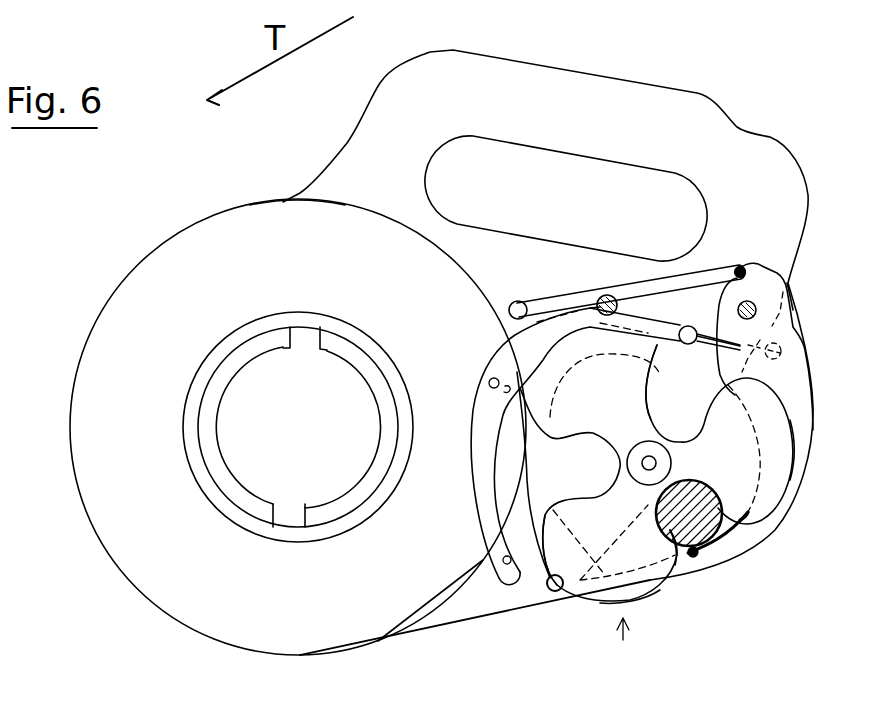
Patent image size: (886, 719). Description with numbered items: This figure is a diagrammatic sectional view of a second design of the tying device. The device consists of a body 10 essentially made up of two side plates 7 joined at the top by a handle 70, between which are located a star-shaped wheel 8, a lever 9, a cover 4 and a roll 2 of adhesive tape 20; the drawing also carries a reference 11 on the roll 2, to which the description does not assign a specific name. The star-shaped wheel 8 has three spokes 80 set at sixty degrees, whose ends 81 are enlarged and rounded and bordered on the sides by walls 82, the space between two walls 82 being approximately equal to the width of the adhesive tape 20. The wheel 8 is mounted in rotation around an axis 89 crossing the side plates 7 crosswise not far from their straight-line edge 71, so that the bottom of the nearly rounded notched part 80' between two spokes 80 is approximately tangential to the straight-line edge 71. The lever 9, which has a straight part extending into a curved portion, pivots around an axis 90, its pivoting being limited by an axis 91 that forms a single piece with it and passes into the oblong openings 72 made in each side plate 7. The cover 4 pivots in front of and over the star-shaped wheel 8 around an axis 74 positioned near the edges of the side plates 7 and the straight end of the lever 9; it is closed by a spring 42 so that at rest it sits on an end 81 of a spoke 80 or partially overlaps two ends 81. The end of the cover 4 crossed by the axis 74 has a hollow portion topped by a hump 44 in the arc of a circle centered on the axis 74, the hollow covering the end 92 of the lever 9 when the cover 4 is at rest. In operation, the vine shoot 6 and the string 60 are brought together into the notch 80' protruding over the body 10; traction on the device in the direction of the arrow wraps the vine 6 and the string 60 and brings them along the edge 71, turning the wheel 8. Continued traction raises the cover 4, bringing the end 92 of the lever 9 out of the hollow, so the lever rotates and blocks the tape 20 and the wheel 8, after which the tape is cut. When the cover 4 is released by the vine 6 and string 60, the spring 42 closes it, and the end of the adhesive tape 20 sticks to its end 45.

The body 10 is at (95, 256).
The reel periphery 11 is at (265, 190).
The roll 2 is at (393, 590).
The handle 70 is at (639, 112).
The oblong openings 72 is at (478, 436).
The axis 91 is at (490, 373).
The spring 42 is at (657, 333).
The axis 90 is at (600, 293).
The axis 74 is at (687, 325).
The lever 9 is at (737, 310).
The end of the lever 92 is at (755, 265).
The cover 4 is at (805, 345).
The hump 44 is at (792, 290).
The spokes 80 is at (668, 422).
The notched part 80' is at (577, 569).
The axis 89 is at (672, 460).
The walls 82 is at (782, 455).
The ends 81 is at (760, 475).
The vine shoot 6 is at (740, 537).
The string 60 is at (745, 570).
The end of the cover 45 is at (757, 530).
The side plates 7 is at (547, 600).
The adhesive tape 20 is at (547, 578).
The straight-line edge 71 is at (650, 508).
The star-shaped wheel 8 is at (612, 661).